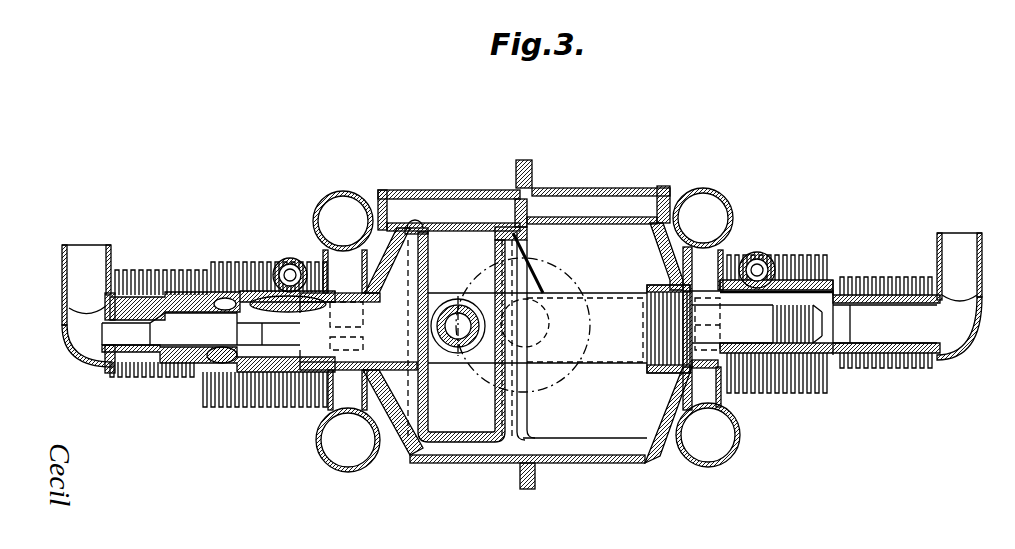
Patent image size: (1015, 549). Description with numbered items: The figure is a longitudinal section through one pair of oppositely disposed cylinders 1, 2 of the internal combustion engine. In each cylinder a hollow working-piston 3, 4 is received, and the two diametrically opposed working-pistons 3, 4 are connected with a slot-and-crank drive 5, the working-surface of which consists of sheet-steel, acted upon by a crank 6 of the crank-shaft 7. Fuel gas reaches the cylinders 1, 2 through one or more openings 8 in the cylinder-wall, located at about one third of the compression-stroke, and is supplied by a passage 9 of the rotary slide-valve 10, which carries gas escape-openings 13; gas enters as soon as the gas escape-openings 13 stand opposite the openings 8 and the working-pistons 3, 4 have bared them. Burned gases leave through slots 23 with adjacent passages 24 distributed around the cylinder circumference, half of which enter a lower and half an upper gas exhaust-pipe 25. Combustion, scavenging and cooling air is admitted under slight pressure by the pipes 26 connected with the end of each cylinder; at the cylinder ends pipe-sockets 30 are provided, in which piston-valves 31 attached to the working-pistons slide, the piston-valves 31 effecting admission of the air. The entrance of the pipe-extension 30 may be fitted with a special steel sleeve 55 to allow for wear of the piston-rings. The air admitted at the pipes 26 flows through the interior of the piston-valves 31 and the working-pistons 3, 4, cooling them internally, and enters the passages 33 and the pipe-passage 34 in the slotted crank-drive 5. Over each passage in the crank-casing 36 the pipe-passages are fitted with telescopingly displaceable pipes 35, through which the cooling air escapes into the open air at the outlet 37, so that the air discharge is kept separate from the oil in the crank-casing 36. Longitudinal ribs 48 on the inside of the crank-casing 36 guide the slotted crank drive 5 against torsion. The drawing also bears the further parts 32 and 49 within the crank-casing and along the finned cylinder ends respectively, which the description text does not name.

The cylinder 1 is at (233, 292).
The cylinder 2 is at (833, 277).
The working-piston 3 is at (297, 402).
The working-piston 4 is at (620, 367).
The slot-and-crank drive 5 is at (510, 257).
The crank 6 is at (460, 308).
The crank-shaft 7 is at (543, 340).
The openings in the cylinder-wall 8 is at (290, 302).
The passage 9 is at (295, 268).
The rotary slide-valve 10 is at (286, 258).
The gas escape-openings 13 is at (281, 264).
The slots 23 is at (358, 337).
The passages 24 is at (338, 262).
The gas exhaust-pipe 25 is at (340, 192).
The pipe 26 is at (72, 335).
The pipe-socket 30 is at (157, 307).
The piston-valve 31 is at (174, 378).
The cylinder 32 is at (463, 430).
The passages 33 is at (417, 231).
The pipe-passage 34 is at (438, 207).
The telescopingly displaceable pipes 35 is at (603, 205).
The crank-casing 36 is at (557, 188).
The air discharge outlet 37 is at (670, 193).
The longitudinal ribs 48 is at (579, 450).
The cooling fins 49 is at (128, 300).
The steel sleeve 55 is at (212, 358).